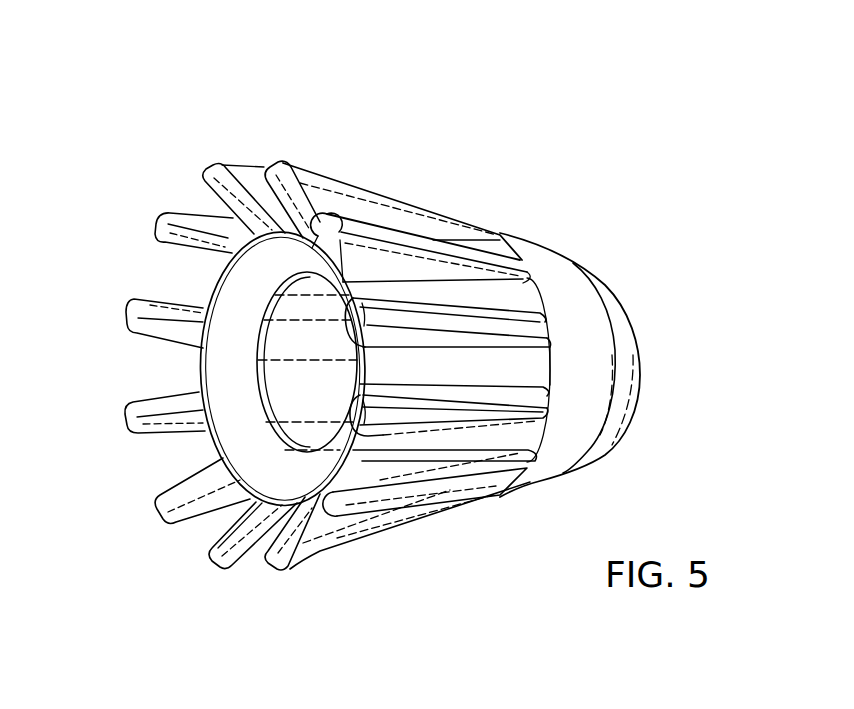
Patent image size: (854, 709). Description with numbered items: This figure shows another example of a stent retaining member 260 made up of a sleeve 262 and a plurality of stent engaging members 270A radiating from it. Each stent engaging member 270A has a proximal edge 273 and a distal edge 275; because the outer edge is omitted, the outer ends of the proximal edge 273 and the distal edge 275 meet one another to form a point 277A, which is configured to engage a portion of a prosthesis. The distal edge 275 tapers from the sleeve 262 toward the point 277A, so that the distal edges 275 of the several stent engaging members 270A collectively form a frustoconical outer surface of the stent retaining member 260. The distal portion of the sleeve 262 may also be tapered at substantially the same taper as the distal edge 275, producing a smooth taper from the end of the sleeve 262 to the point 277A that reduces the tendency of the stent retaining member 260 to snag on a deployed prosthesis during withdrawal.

The stent retaining member 260 is at (500, 128).
The sleeve 262 is at (582, 285).
The stent engaging member 270A is at (363, 222).
The proximal edge 273 is at (152, 228).
The distal edge 275 is at (415, 238).
The point 277A is at (318, 177).